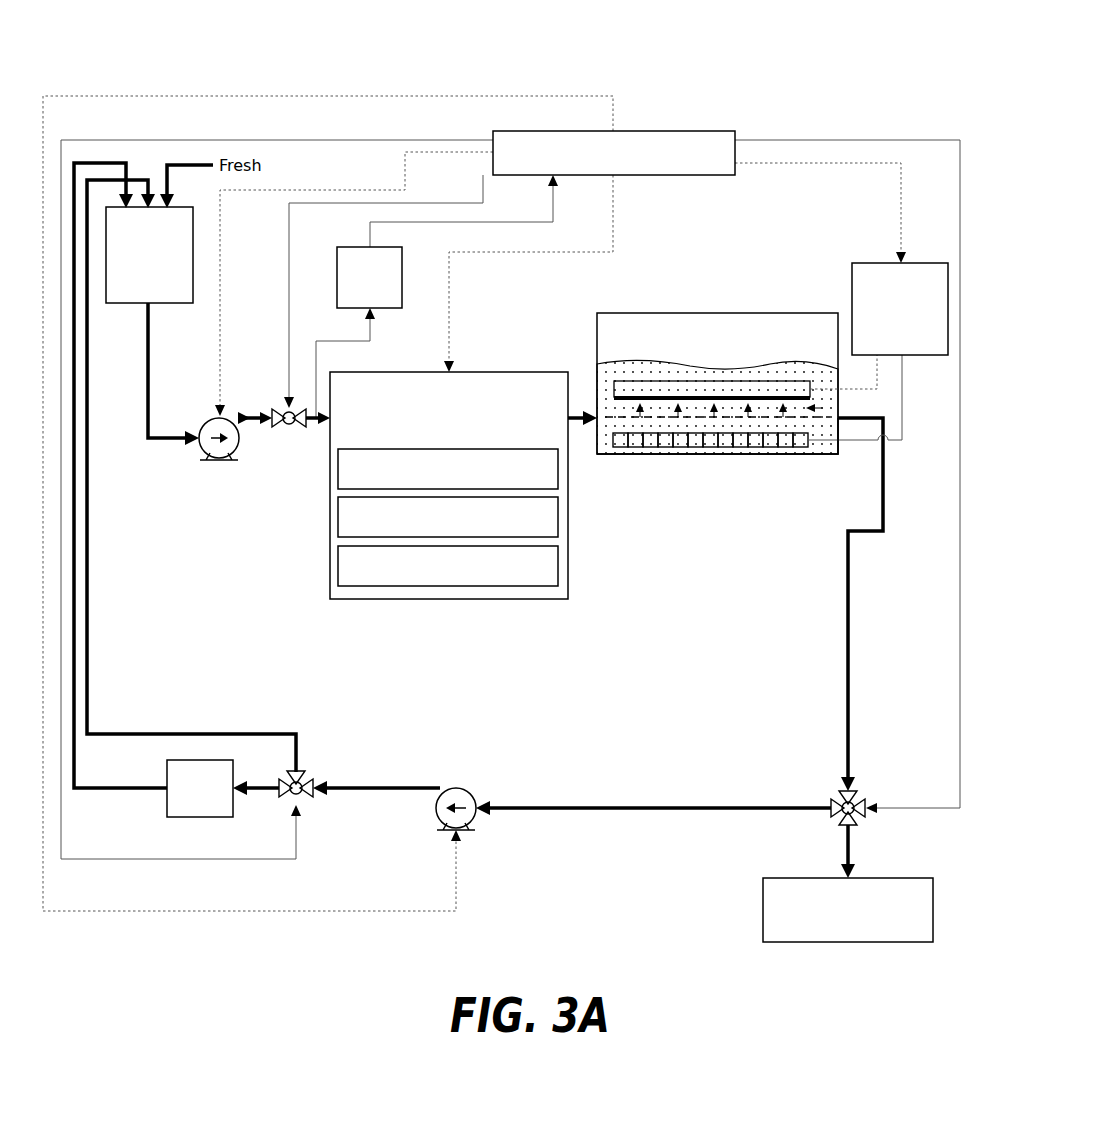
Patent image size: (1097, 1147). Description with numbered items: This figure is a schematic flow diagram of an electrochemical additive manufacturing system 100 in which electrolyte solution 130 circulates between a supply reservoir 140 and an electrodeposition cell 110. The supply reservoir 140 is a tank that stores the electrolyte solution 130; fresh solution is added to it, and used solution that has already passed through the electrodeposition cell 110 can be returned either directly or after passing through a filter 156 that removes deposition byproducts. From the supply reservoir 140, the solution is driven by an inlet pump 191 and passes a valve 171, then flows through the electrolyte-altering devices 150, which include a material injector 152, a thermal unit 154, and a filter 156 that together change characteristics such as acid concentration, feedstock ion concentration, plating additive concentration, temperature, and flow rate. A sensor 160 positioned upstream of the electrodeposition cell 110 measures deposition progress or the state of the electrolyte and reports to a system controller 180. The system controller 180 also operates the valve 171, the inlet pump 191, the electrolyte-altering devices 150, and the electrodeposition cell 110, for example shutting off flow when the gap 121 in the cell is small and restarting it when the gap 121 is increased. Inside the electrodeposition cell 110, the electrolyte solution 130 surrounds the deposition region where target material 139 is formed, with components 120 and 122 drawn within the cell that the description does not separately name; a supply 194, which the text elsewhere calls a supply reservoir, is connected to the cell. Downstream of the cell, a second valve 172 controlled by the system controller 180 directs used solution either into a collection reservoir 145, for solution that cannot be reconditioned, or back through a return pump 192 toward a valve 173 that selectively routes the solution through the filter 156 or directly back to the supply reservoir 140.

The electrochemical additive manufacturing system 100 is at (906, 106).
The electrodeposition cell 110 is at (749, 389).
The substrate / electrode 120 is at (707, 390).
The gap 121 is at (835, 408).
The heating elements 122 is at (772, 446).
The electrolyte solution 130 is at (818, 453).
The target material 139 is at (618, 413).
The supply reservoir 140 is at (149, 255).
The collection reservoir 145 is at (848, 910).
The electrolyte-altering devices 150 is at (367, 594).
The material injector 152 is at (448, 469).
The thermal unit 154 is at (448, 517).
The filter 156 is at (362, 681).
The sensor 160 is at (369, 277).
The valve 171 is at (287, 428).
The second valve 172 is at (840, 814).
The valve 173 is at (300, 797).
The system controller 180 is at (614, 153).
The inlet pump 191 is at (220, 462).
The return pump 192 is at (468, 826).
The supply reservoir 194 is at (900, 309).